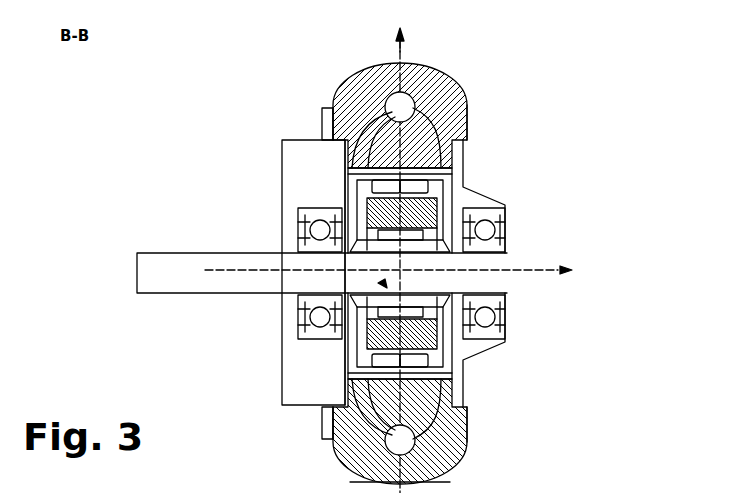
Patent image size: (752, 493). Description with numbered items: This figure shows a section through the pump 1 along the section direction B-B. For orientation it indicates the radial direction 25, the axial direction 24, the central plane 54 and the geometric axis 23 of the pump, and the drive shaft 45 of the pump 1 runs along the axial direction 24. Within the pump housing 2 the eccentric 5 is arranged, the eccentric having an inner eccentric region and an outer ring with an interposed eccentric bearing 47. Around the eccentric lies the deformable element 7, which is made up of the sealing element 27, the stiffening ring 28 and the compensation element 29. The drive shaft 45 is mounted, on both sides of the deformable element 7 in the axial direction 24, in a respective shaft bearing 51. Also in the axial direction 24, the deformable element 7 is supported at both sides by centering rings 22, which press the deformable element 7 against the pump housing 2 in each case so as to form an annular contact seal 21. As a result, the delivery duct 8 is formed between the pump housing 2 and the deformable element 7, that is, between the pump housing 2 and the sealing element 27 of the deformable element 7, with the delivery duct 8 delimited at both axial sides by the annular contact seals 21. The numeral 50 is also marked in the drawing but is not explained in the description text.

The pump 1 is at (163, 99).
The pump housing 2 is at (470, 106).
The eccentric 5 is at (378, 283).
The deformable element 7 is at (345, 338).
The delivery duct 8 is at (352, 108).
The annular contact seal 21 is at (323, 125).
The centering ring 22 is at (345, 197).
The geometric axis 23 is at (548, 268).
The axial direction 24 is at (557, 268).
The radial direction 25 is at (405, 52).
The sealing element 27 is at (380, 367).
The stiffening ring 28 is at (372, 357).
The compensation element 29 is at (365, 345).
The drive shaft 45 is at (170, 252).
The eccentric bearing 47 is at (433, 223).
The lower housing section 50 is at (382, 487).
The shaft bearing 51 is at (298, 317).
The central plane 54 is at (412, 64).